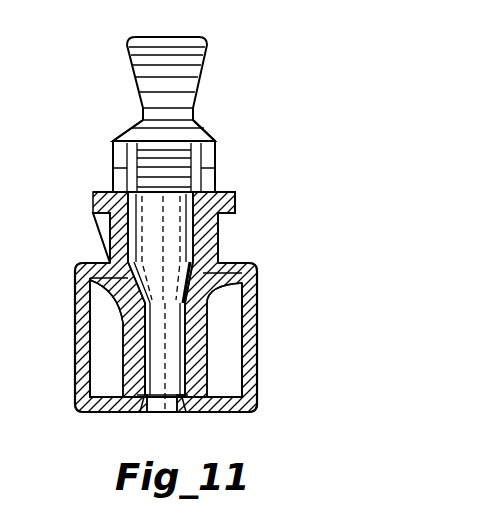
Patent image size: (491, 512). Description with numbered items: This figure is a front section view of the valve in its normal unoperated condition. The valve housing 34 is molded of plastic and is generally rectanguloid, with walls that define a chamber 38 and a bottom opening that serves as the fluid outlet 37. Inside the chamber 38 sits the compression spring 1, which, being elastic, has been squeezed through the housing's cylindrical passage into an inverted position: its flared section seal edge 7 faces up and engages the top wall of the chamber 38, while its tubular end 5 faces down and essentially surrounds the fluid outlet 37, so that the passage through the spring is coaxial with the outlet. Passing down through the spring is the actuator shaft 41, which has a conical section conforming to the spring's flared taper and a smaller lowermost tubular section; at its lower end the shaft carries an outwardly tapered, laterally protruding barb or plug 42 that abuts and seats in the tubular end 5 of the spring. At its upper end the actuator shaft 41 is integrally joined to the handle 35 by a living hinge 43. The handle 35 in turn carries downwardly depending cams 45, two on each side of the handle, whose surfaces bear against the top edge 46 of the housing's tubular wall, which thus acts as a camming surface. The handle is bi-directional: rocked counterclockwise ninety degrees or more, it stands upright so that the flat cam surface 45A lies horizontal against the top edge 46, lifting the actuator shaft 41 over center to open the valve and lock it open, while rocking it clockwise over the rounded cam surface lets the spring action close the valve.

The compression spring 1 is at (108, 311).
The tubular end 5 is at (197, 390).
The flared section seal edge 7 is at (250, 282).
The valve housing 34 is at (258, 360).
The handle 35 is at (204, 57).
The fluid outlet 37 is at (188, 413).
The chamber 38 is at (100, 360).
The actuator shaft 41 is at (176, 233).
The plug 42 is at (160, 413).
The living hinge 43 is at (172, 162).
The cam 45 is at (220, 188).
The flat cam surface 45A is at (123, 173).
The top edge 46 is at (97, 192).